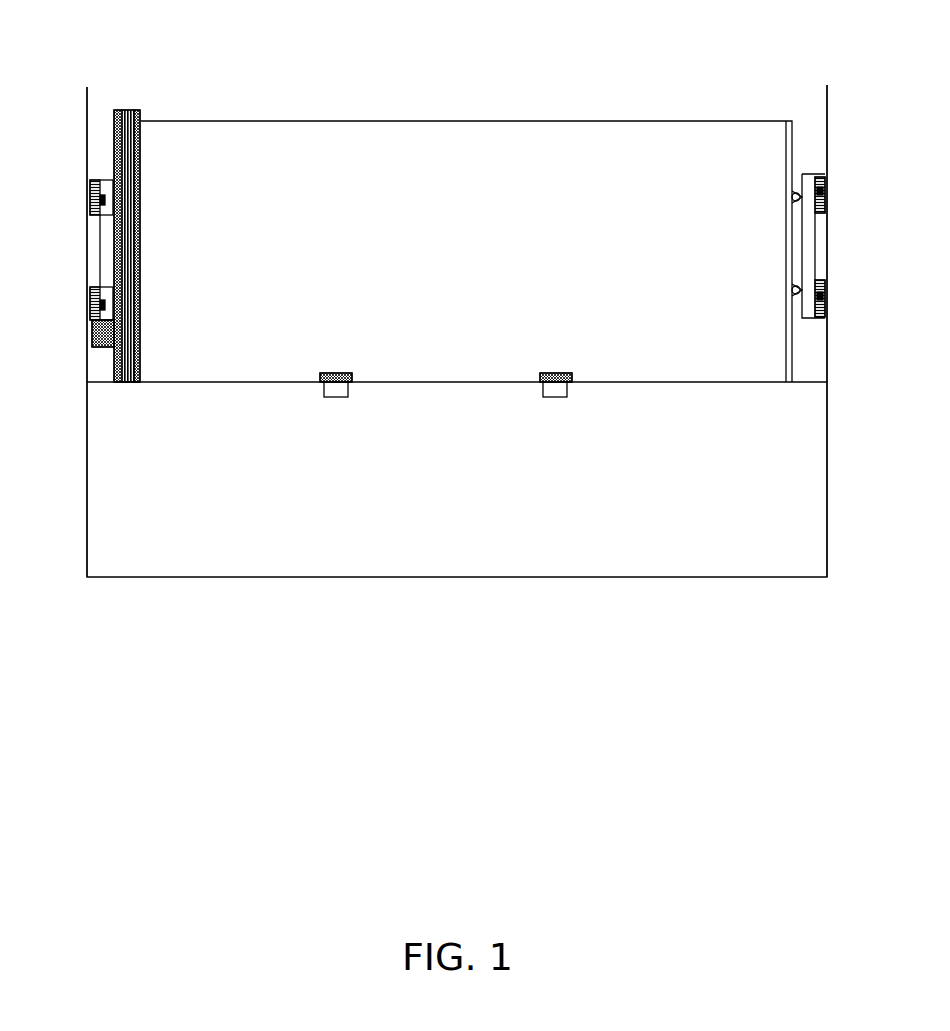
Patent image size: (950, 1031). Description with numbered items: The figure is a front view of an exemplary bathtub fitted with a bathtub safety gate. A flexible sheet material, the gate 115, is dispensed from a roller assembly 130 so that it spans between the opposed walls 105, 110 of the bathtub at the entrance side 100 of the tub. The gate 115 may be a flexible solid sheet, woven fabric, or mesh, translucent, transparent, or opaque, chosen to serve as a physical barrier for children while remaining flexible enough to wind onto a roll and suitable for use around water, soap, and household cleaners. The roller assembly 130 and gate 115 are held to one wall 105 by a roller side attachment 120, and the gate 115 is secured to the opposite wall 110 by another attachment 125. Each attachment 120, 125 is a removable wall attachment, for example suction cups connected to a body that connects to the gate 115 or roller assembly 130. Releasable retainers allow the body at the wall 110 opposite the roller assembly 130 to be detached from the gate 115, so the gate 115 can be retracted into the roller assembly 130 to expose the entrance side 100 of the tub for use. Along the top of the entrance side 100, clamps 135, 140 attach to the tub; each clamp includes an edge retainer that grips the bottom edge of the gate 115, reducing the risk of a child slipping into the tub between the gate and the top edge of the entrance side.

The entrance side 100 is at (452, 535).
The wall 105 is at (87, 370).
The wall 110 is at (827, 362).
The flexible sheet material 115 is at (433, 165).
The roller side attachment 120 is at (100, 253).
The attachment 125 is at (808, 233).
The roller assembly 130 is at (120, 108).
The clamp 135 is at (337, 388).
The clamp 140 is at (562, 388).